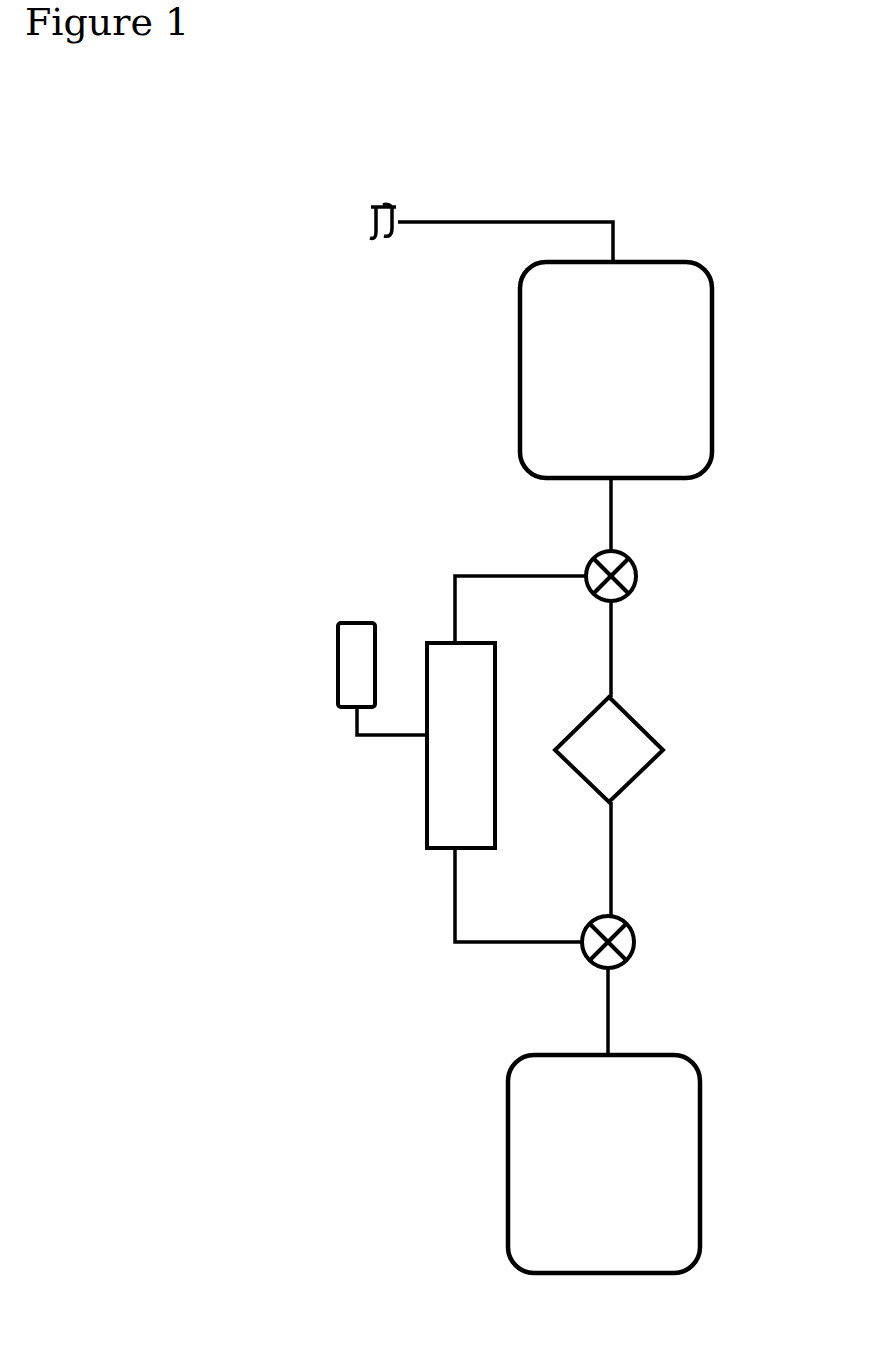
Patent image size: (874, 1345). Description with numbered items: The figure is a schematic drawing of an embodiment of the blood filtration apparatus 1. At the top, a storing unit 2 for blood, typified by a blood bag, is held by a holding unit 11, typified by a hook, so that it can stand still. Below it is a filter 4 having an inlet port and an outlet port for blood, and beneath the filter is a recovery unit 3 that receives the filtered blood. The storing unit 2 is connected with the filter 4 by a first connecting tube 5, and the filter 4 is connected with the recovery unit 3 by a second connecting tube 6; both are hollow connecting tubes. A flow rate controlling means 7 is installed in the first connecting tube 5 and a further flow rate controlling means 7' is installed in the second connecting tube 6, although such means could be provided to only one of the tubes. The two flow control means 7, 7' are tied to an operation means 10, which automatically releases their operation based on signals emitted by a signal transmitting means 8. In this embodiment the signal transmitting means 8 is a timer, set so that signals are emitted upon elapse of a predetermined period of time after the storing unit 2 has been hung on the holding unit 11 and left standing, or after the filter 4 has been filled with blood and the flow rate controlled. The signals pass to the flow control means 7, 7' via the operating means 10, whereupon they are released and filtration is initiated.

The blood filtration apparatus 1 is at (400, 432).
The storing unit 2 is at (681, 367).
The recovery unit 3 is at (672, 1165).
The filter 4 is at (641, 754).
The first connecting tube 5 is at (632, 517).
The second connecting tube 6 is at (629, 860).
The flow rate controlling means 7 is at (663, 581).
The flow rate controlling means 7' is at (667, 947).
The signal transmitting means 8 is at (356, 668).
The operation means 10 is at (444, 787).
The holding unit 11 is at (636, 242).